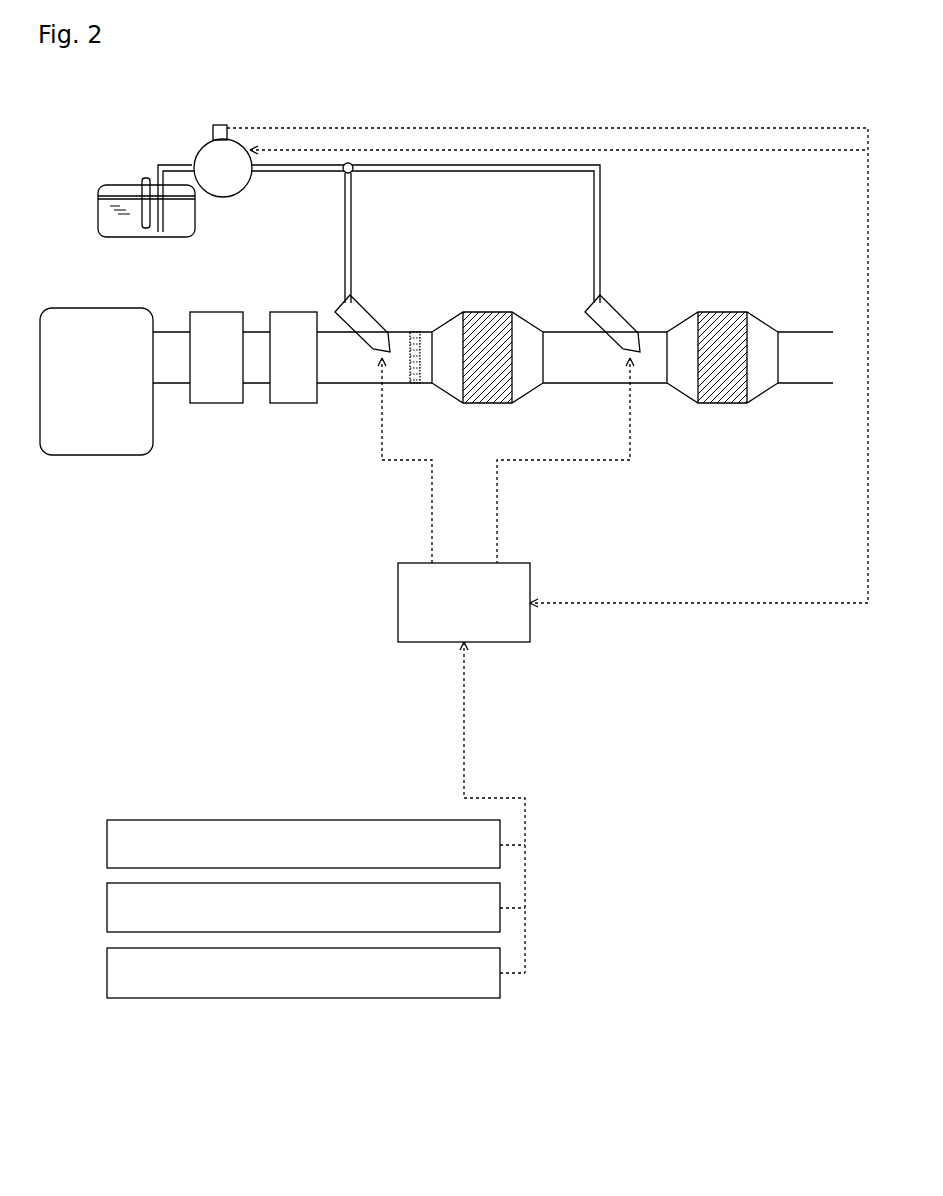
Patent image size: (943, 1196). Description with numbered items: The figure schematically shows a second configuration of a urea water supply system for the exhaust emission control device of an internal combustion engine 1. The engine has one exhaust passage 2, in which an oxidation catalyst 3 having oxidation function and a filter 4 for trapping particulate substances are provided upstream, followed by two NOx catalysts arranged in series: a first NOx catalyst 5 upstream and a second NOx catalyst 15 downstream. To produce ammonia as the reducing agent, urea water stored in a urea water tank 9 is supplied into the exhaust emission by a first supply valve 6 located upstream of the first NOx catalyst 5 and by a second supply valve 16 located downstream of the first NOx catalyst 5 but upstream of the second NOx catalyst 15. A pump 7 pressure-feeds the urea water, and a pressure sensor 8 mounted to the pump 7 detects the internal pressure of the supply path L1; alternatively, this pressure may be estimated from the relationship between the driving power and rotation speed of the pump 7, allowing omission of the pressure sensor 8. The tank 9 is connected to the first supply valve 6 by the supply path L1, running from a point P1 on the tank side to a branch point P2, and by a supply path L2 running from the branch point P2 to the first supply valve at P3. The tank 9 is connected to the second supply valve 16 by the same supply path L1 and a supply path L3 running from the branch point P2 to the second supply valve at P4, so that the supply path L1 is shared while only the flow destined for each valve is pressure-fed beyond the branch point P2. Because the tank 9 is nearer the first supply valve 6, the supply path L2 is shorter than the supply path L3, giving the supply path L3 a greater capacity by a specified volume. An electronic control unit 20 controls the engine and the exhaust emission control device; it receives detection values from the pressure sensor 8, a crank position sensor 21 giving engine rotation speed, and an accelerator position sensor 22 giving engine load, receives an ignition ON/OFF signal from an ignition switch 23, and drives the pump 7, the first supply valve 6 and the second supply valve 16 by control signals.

The internal combustion engine 1 is at (113, 308).
The exhaust passage 2 is at (170, 332).
The oxidation catalyst 3 is at (219, 312).
The filter 4 is at (274, 312).
The first NOx catalyst 5 is at (476, 403).
The first supply valve 6 is at (372, 318).
The pump 7 is at (230, 197).
The pressure sensor 8 is at (215, 125).
The urea water tank 9 is at (104, 185).
The second NOx catalyst 15 is at (730, 403).
The second supply valve 16 is at (621, 318).
The electronic control unit (ECU) 20 is at (532, 582).
The crank position sensor 21 is at (107, 848).
The accelerator position sensor 22 is at (107, 911).
The ignition switch 23 is at (107, 976).
The point on the urea water tank side P1 is at (148, 178).
The branch point P2 is at (354, 171).
The first supply valve point P3 is at (343, 302).
The second supply valve point P4 is at (590, 302).
The supply path L1 is at (292, 172).
The supply path L2 is at (352, 235).
The supply path L3 is at (498, 172).